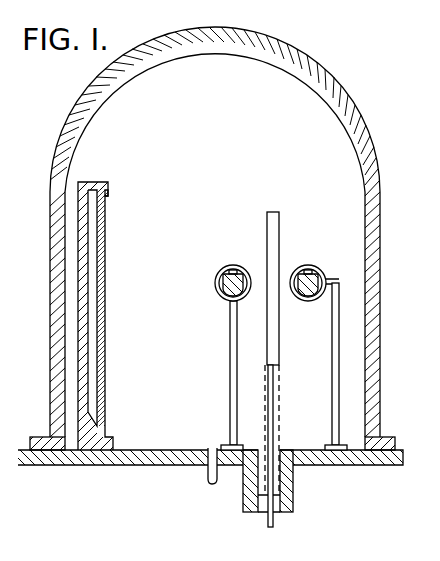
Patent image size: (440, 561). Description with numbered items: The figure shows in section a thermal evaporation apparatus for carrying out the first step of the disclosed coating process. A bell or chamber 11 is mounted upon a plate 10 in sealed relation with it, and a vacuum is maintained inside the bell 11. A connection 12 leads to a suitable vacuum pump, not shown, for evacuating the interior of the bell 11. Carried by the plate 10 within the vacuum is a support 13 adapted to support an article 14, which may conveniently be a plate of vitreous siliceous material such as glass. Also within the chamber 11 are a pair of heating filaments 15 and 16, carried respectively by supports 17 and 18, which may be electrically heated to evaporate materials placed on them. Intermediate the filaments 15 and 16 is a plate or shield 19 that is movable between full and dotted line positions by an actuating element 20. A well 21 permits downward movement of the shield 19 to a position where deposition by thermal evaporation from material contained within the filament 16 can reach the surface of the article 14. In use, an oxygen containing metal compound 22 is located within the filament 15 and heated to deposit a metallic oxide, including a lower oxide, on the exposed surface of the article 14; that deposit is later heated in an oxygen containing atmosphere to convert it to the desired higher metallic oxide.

The plate 10 is at (114, 466).
The bell or chamber 11 is at (381, 184).
The connection to vacuum pump 12 is at (205, 478).
The support 13 is at (80, 277).
The article 14 is at (100, 229).
The heating filament 15 is at (224, 270).
The heating filament 16 is at (313, 266).
The support 17 is at (230, 377).
The support 18 is at (332, 377).
The plate or shield 19 is at (280, 230).
The actuating element 20 is at (275, 511).
The well 21 is at (295, 486).
The oxygen containing metal compound 22 is at (222, 291).